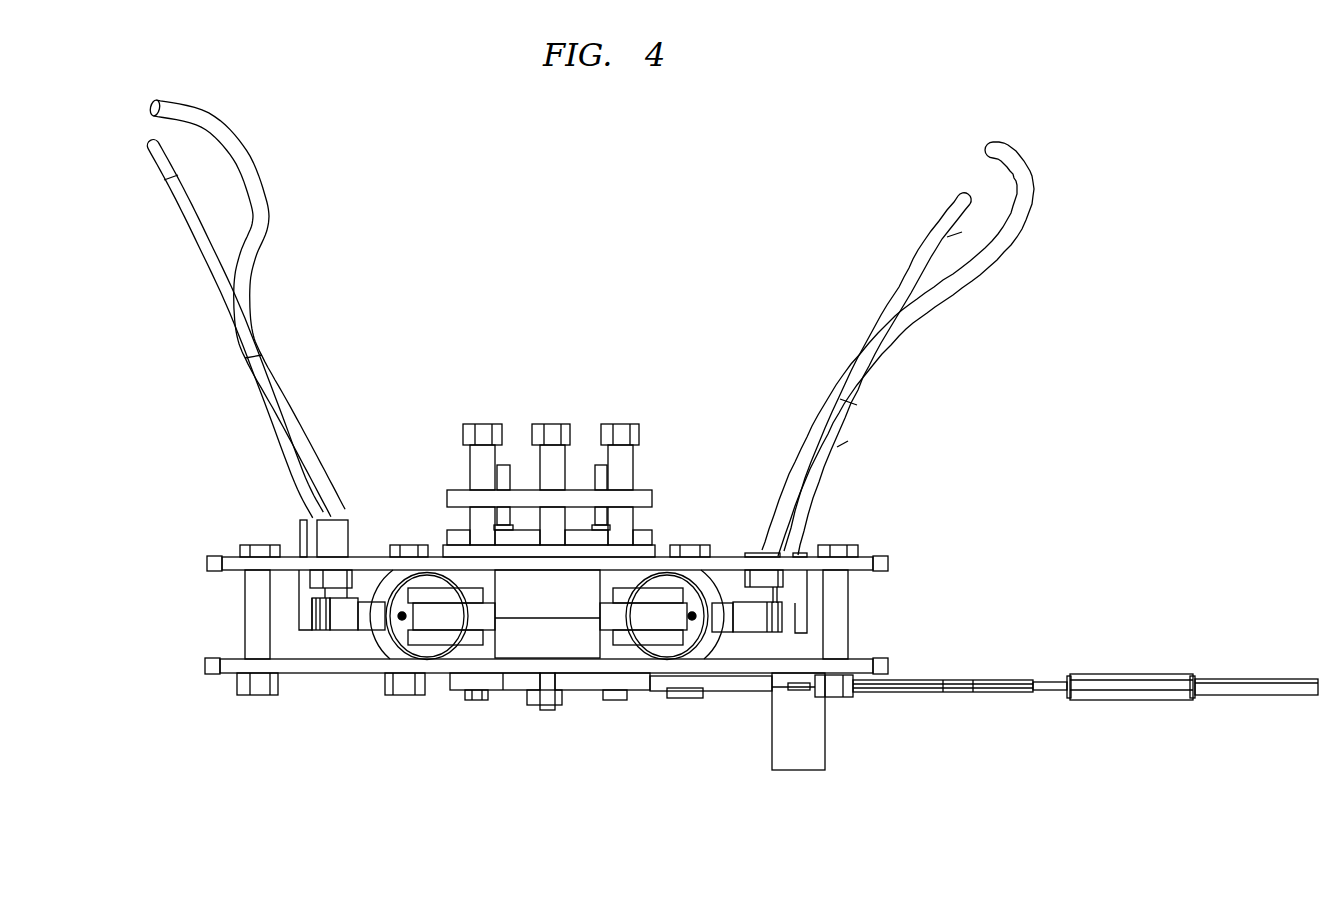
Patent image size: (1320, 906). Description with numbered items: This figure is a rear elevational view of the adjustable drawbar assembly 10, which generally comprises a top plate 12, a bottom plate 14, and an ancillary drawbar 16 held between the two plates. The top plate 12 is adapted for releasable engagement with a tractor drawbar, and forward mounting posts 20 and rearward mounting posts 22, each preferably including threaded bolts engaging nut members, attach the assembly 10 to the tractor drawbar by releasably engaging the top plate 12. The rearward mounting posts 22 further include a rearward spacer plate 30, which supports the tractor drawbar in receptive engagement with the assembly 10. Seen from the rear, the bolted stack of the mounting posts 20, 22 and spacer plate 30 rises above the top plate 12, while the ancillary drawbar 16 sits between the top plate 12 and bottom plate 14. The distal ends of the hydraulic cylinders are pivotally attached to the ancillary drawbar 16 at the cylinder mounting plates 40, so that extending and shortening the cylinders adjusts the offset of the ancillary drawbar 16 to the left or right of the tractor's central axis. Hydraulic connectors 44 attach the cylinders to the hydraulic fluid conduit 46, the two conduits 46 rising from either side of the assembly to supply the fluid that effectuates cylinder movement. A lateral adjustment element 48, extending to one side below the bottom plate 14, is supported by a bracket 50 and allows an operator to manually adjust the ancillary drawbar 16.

The adjustable drawbar assembly 10 is at (638, 213).
The top plate 12 is at (890, 568).
The bottom plate 14 is at (890, 672).
The ancillary drawbar 16 is at (548, 632).
The forward mounting posts 20 is at (593, 463).
The rearward mounting posts 22 is at (708, 429).
The rearward spacer plate 30 is at (653, 499).
The cylinder mounting plate 40 is at (450, 617).
The hydraulic connectors 44 is at (298, 575).
The hydraulic fluid conduit 46 is at (215, 267).
The lateral adjustment element 48 is at (1317, 783).
The bracket 50 is at (812, 750).